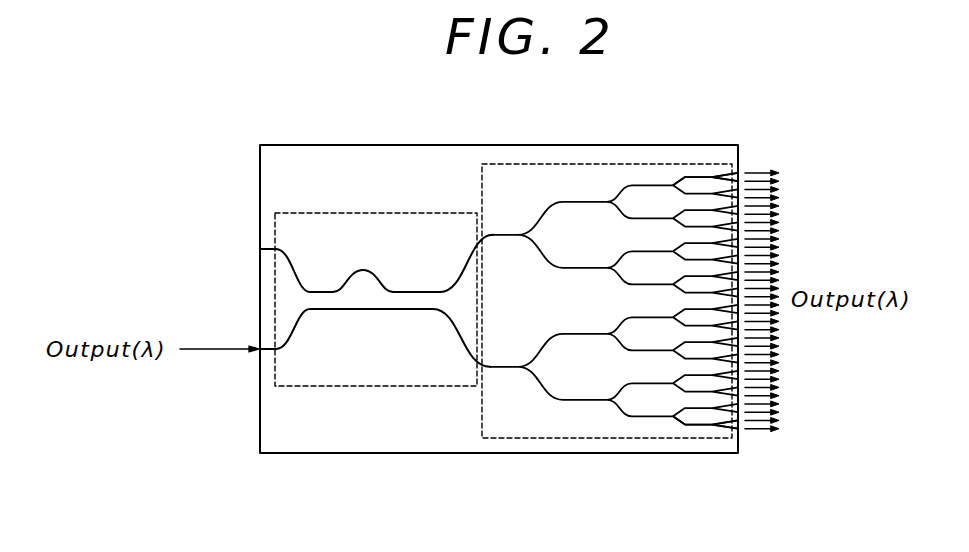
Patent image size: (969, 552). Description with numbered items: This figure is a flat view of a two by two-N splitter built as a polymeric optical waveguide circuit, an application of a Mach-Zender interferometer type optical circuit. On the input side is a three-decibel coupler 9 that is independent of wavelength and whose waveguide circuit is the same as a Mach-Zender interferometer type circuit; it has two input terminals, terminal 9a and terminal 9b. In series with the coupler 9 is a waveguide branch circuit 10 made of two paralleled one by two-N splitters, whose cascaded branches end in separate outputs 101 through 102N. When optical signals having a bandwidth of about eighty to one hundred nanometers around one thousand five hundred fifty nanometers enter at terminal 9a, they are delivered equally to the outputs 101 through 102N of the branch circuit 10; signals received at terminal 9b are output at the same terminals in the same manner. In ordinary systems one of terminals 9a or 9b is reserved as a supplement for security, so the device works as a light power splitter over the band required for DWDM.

The 3 dB coupler 9 is at (375, 206).
The terminal 9a is at (271, 353).
The terminal 9b is at (271, 247).
The waveguide branch circuit 10 is at (503, 206).
The output 101 is at (721, 176).
The output 102N is at (722, 430).